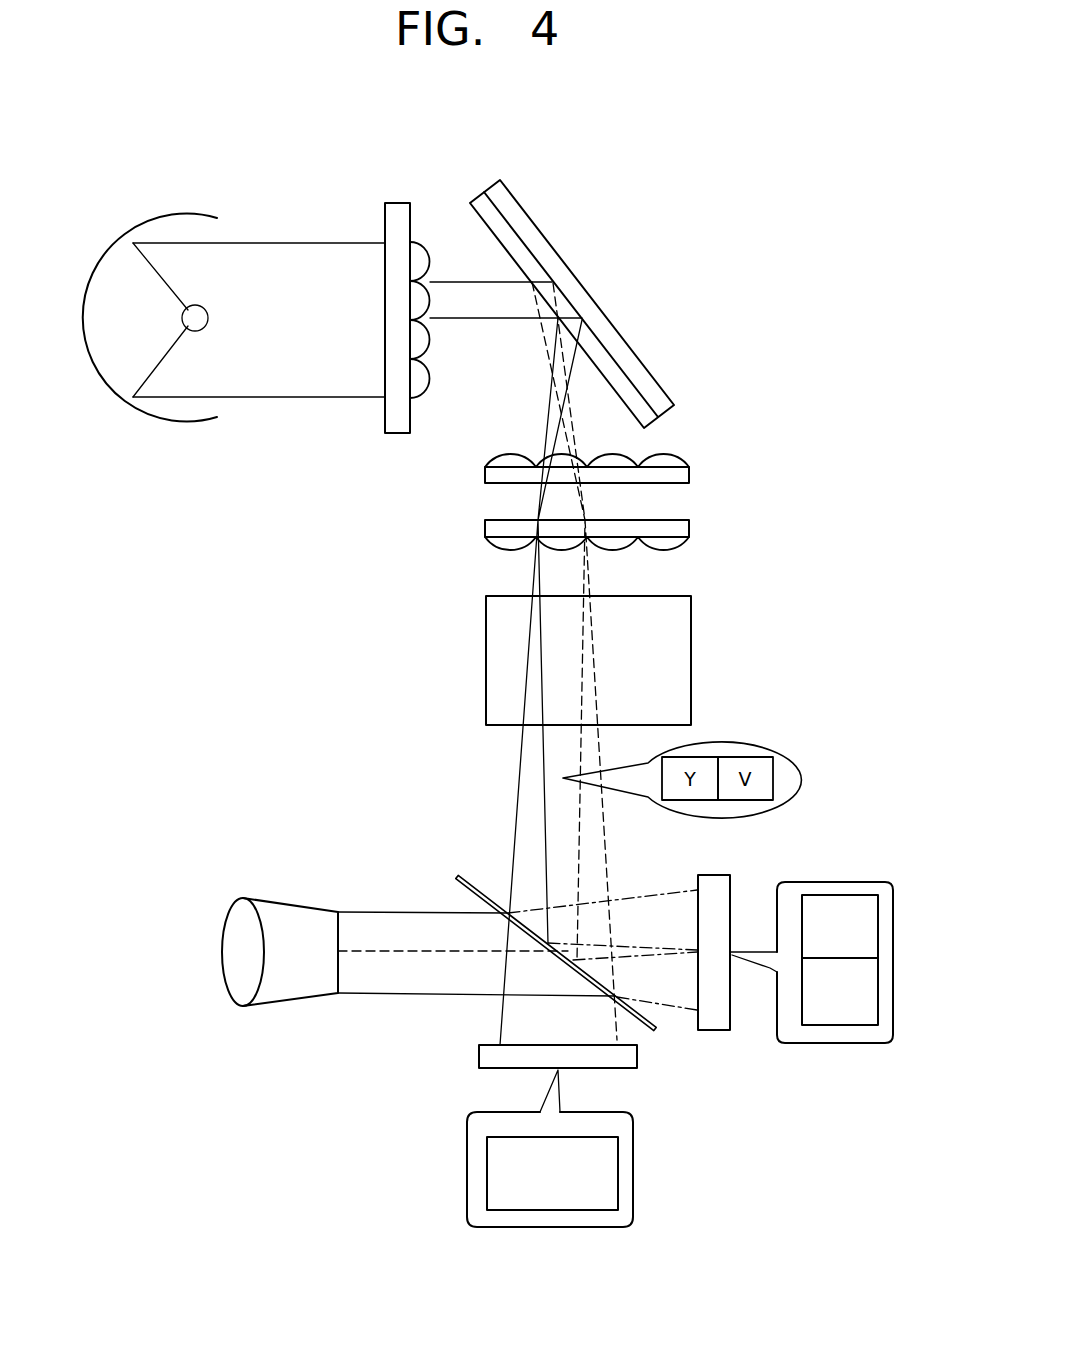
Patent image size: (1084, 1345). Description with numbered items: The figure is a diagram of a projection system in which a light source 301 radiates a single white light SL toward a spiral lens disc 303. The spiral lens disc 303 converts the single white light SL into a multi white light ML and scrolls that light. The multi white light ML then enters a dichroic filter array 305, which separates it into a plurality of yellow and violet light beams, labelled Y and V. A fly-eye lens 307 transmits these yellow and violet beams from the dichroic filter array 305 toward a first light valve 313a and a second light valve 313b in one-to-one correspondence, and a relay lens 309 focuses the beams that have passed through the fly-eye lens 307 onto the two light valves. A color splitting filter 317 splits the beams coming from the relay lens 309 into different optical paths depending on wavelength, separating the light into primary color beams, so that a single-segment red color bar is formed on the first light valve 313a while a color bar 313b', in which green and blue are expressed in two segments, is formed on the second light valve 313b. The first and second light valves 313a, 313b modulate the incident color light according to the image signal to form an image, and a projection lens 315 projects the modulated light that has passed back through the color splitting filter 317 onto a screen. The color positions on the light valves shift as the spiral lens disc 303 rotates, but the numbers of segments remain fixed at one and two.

The light source 301 is at (115, 256).
The single white light SL is at (283, 240).
The spiral lens disc 303 is at (400, 206).
The multi white light ML is at (462, 281).
The dichroic filter array 305 is at (540, 228).
The yellow light Y is at (471, 200).
The violet light V is at (491, 188).
The fly-eye lens 307 is at (690, 478).
The relay lens 309 is at (691, 654).
The projection lens 315 is at (290, 908).
The color splitting filter 317 is at (459, 876).
The first light valve 313a is at (479, 1053).
The second light valve 313b is at (713, 985).
The color bar 313b' is at (811, 989).